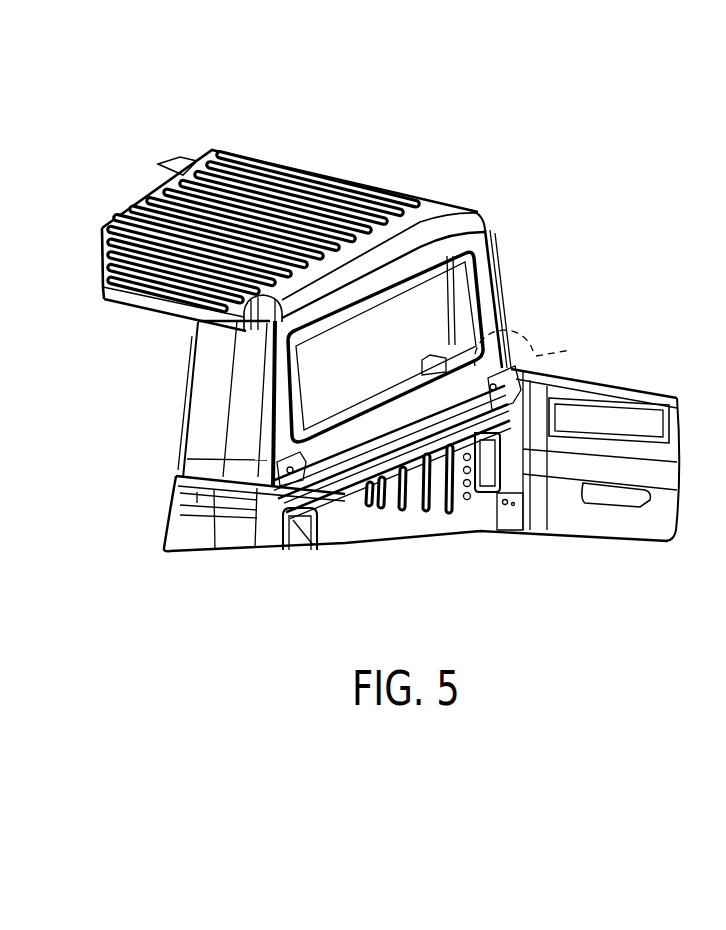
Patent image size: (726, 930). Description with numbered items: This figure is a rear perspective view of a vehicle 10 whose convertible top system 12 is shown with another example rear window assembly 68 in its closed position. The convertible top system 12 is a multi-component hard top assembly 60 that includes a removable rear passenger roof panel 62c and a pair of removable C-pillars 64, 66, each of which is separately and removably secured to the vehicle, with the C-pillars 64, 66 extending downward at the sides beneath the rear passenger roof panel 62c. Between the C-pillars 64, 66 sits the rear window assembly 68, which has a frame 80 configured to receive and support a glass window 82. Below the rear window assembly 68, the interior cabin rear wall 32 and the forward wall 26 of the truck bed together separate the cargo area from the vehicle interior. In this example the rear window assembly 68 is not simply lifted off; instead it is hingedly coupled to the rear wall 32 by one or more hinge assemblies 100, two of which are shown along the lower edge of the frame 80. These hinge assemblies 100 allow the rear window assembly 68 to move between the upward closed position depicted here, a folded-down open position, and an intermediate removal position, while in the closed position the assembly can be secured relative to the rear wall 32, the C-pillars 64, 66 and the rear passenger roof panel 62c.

The vehicle 10 is at (592, 112).
The convertible top system 12 is at (382, 282).
The multi-component hard top assembly 60 is at (216, 110).
The rear passenger roof panel 62c is at (319, 188).
The removable C-pillar 64 is at (217, 443).
The removable C-pillar 66 is at (505, 283).
The rear window assembly 68 is at (463, 220).
The frame 80 is at (282, 390).
The glass window 82 is at (270, 363).
The hinge assembly 100 is at (533, 362).
The forward wall 26 is at (355, 508).
The interior cabin rear wall 32 is at (265, 488).